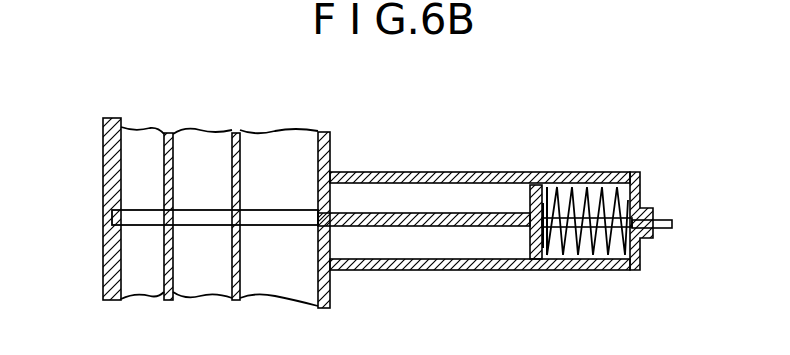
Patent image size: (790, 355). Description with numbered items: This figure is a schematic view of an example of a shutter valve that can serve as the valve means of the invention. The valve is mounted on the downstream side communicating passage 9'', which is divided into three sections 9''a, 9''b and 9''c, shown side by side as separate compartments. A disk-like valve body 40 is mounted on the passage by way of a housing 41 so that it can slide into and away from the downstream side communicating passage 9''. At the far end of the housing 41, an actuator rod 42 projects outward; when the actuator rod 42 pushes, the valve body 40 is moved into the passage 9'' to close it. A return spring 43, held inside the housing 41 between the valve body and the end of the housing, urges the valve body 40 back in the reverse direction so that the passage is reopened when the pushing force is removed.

The downstream side communicating passage 9'' is at (190, 213).
The section of downstream side communicating passage 9''a is at (279, 217).
The section of downstream side communicating passage 9''b is at (202, 213).
The section of downstream side communicating passage 9''c is at (142, 213).
The valve body 40 is at (449, 226).
The housing 41 is at (472, 176).
The actuator rod 42 is at (668, 219).
The return spring 43 is at (608, 196).